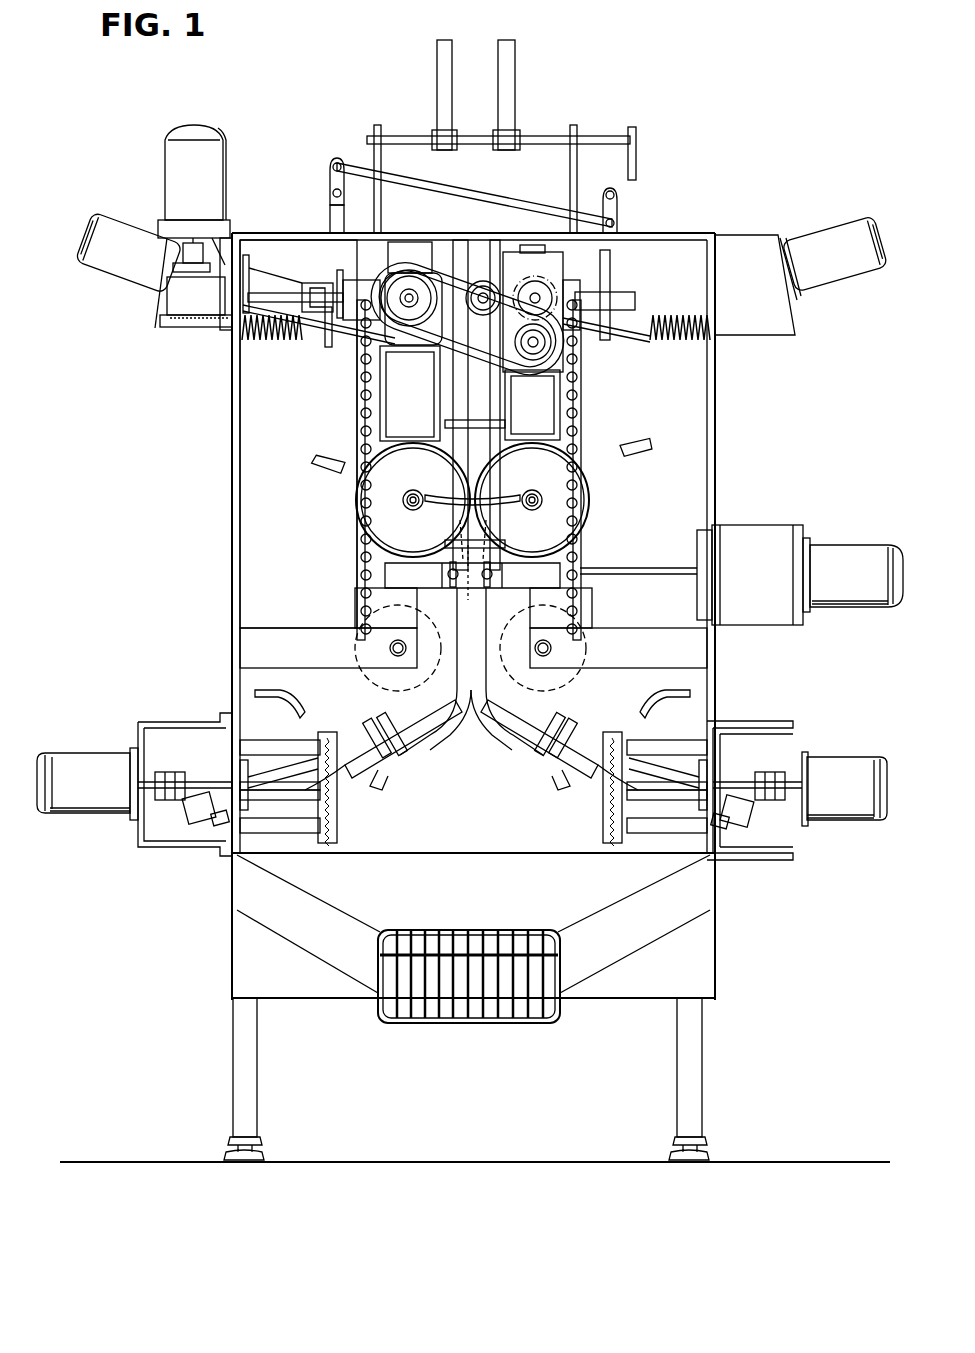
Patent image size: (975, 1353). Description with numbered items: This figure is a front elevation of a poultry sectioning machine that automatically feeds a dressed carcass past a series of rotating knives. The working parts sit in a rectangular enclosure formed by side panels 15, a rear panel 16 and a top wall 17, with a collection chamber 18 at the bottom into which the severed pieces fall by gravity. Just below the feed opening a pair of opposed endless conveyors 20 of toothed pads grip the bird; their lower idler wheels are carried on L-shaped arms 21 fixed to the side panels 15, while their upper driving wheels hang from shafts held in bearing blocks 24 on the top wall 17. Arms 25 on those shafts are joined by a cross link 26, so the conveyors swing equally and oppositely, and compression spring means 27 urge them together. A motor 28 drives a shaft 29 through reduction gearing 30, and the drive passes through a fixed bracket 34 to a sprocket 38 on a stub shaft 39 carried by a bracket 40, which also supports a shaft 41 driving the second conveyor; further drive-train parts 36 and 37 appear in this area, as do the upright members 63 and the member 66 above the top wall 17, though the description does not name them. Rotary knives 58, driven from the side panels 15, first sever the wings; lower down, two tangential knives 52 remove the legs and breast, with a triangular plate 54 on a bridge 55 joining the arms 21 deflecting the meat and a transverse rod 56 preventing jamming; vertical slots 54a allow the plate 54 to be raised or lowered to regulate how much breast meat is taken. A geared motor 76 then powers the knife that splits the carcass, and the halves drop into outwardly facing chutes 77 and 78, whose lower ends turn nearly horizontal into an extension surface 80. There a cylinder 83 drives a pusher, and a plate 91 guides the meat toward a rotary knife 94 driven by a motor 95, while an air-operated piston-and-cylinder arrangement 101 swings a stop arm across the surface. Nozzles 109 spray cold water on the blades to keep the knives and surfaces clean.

The side panels 15 is at (232, 468).
The rear panel 16 is at (298, 434).
The top wall 17 is at (678, 233).
The collection chamber 18 is at (473, 938).
The endless conveyors 20 is at (582, 418).
The L-shaped arms 21 is at (297, 632).
The bearing blocks 24 is at (330, 212).
The arms 25 is at (330, 180).
The cross link 26 is at (498, 196).
The compression spring means 27 is at (276, 340).
The motor 28 is at (224, 175).
The shaft 29 is at (295, 282).
The reduction gearing 30 is at (165, 320).
The fixed bracket 34 is at (400, 268).
The drive rod 36 is at (370, 342).
The gear housing 37 is at (432, 365).
The sprocket 38 is at (575, 360).
The stub shaft 39 is at (550, 343).
The bracket 40 is at (560, 262).
The shaft 41 is at (538, 296).
The knives 52 is at (472, 500).
The triangular plate 54 is at (462, 548).
The vertical slots 54a is at (500, 565).
The bridge 55 is at (550, 575).
The transverse rod 56 is at (502, 503).
The rotary knives 58 is at (522, 400).
The vertical guide bars 63 is at (500, 50).
The handle 66 is at (636, 128).
The geared motor 76 is at (773, 543).
The chute 77 is at (432, 758).
The chute 78 is at (494, 758).
The extension surface 80 is at (370, 770).
The cylinder 83 is at (497, 695).
The plate 91 is at (380, 788).
The rotary knife 94 is at (336, 815).
The motor 95 is at (78, 806).
The piston-and-cylinder arrangement 101 is at (198, 814).
The nozzles 109 is at (320, 466).